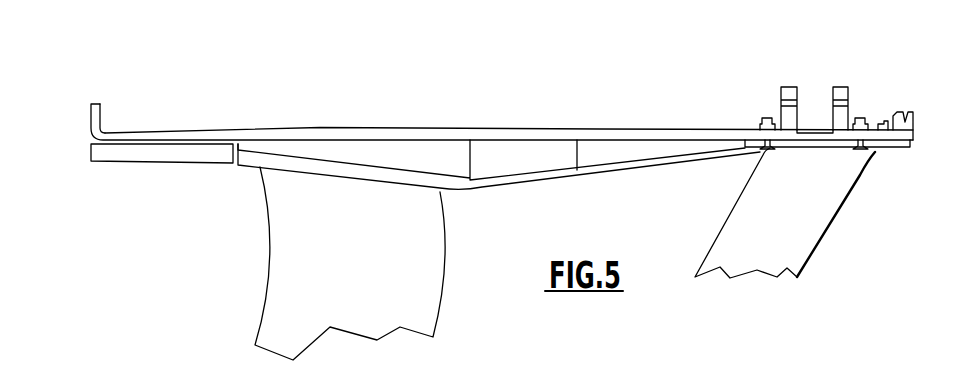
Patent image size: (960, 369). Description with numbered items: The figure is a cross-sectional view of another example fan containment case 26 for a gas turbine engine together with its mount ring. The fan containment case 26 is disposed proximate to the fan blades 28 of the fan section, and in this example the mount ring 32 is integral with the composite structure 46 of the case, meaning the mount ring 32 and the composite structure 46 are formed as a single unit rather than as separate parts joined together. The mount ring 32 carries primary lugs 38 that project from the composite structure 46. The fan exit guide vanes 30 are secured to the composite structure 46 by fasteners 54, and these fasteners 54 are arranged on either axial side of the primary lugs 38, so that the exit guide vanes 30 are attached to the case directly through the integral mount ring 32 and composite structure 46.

The fan containment case 26 is at (509, 87).
The blades 28 is at (364, 271).
The fan exit guide vanes 30 is at (807, 211).
The mount ring 32 is at (806, 83).
The primary lugs 38 is at (789, 86).
The composite structure 46 is at (597, 129).
The fasteners 54 is at (758, 106).